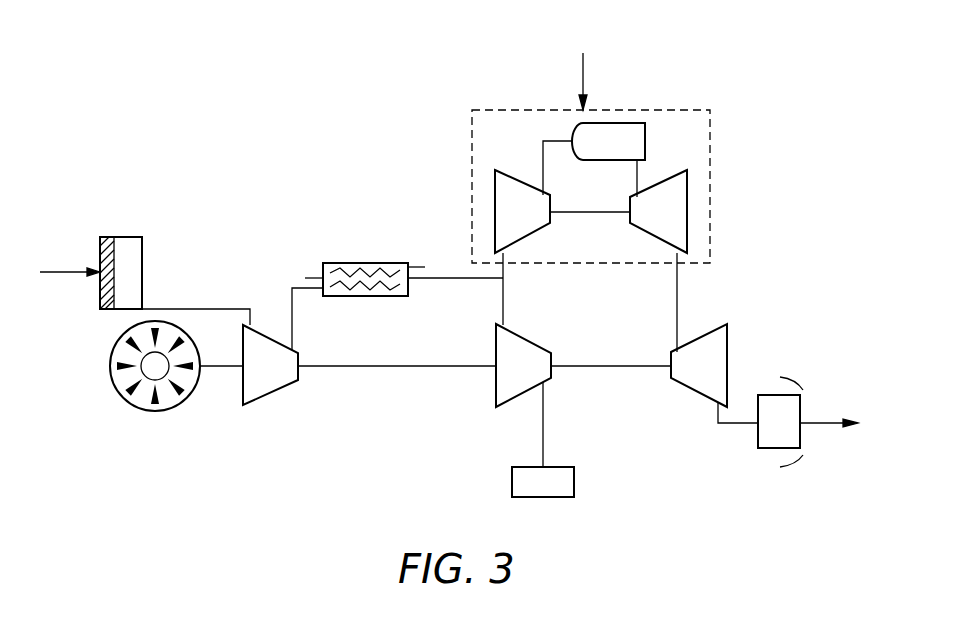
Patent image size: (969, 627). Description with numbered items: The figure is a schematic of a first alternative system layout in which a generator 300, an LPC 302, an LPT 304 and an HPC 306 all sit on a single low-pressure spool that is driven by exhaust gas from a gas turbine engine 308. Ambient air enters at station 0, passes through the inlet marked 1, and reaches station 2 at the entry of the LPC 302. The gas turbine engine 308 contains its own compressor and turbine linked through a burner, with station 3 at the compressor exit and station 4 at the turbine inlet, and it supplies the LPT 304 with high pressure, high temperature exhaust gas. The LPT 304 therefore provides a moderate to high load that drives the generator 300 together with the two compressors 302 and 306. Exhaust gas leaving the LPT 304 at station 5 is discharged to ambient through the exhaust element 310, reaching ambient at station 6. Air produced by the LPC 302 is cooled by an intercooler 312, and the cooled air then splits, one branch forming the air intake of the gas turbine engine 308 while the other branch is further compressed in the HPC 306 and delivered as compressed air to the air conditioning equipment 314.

The ambient inlet station 0 is at (70, 244).
The inlet duct 1 is at (121, 273).
The low pressure compressor inlet station 2 is at (196, 302).
The gas generator compressor exit station 3 is at (547, 168).
The gas generator turbine inlet station 4 is at (648, 177).
The low pressure turbine exit station 5 is at (738, 426).
The exhaust station 6 is at (829, 403).
The generator 300 is at (140, 408).
The LPC 302 is at (270, 393).
The LPT 304 is at (700, 393).
The HPC 306 is at (496, 386).
The gas turbine engine 308 is at (710, 185).
The discharge to ambient 310 is at (757, 440).
The intercooler 312 is at (365, 263).
The air conditioning equipment 314 is at (512, 482).